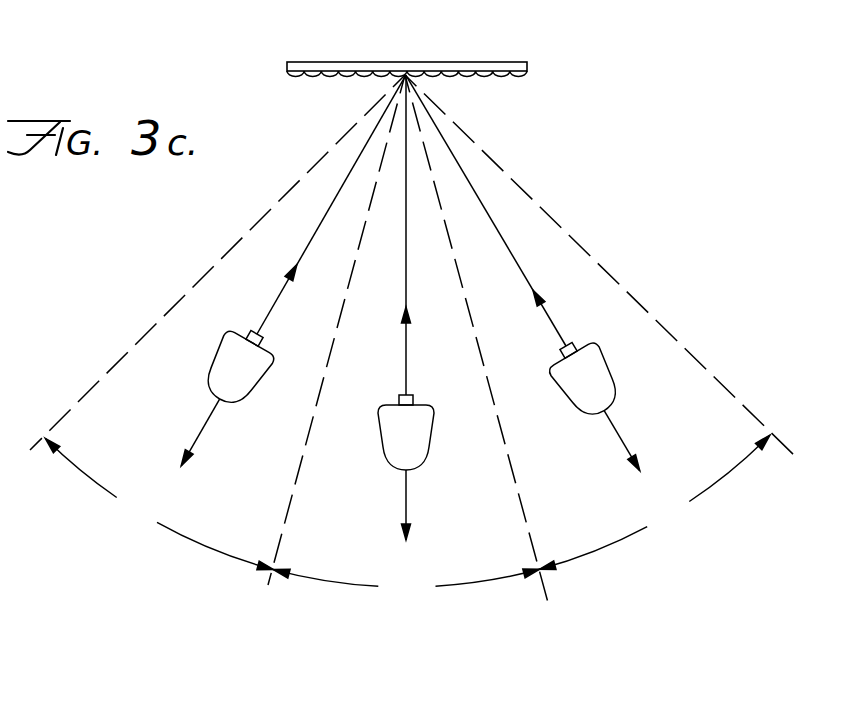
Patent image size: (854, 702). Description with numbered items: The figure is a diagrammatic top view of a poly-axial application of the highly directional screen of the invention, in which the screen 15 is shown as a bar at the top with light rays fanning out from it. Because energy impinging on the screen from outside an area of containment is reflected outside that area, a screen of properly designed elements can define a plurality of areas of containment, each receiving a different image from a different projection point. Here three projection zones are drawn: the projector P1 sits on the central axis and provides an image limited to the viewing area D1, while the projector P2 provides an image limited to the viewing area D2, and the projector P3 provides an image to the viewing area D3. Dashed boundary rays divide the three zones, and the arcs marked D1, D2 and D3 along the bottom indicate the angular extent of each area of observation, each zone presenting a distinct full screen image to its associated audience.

The light source array / illumination bar 15 is at (448, 61).
The projector P1 is at (406, 307).
The projector P2 is at (523, 273).
The projector P3 is at (293, 270).
The viewing area D1 is at (407, 586).
The viewing area D2 is at (159, 504).
The viewing area D3 is at (654, 502).